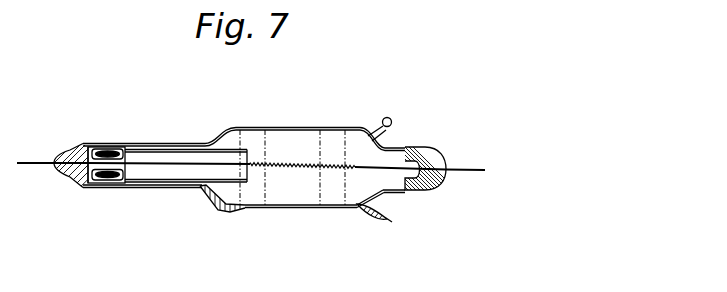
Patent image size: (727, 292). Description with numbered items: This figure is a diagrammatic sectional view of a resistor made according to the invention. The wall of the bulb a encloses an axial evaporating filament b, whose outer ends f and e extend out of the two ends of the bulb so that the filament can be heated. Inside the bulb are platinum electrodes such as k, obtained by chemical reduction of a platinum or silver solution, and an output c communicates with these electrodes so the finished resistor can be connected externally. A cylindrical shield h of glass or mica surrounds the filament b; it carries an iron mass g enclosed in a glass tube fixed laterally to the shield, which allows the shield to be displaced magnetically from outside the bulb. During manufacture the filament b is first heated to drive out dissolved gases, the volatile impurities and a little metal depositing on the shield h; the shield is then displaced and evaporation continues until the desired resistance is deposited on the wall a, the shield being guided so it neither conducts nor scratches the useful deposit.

The wall of the bulb a is at (255, 152).
The evaporating filament b is at (308, 165).
The output c is at (387, 220).
The outer end of the evaporating filament e is at (468, 172).
The outer end of the evaporating filament f is at (37, 166).
The iron mass g is at (101, 182).
The shield h is at (205, 184).
The platinum electrode k is at (253, 197).